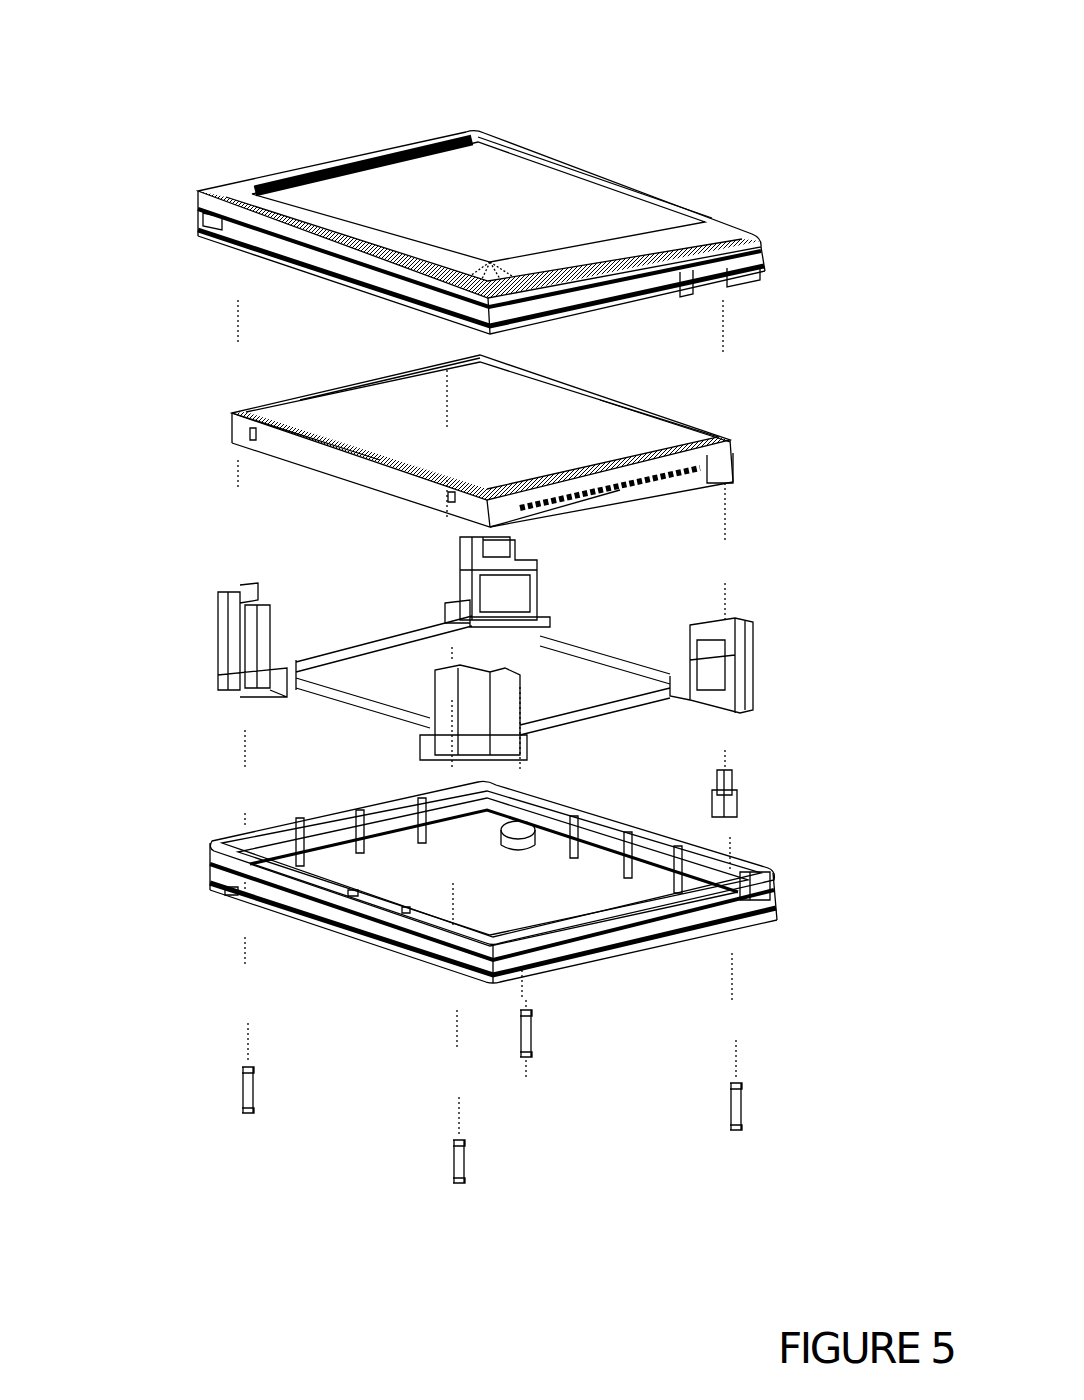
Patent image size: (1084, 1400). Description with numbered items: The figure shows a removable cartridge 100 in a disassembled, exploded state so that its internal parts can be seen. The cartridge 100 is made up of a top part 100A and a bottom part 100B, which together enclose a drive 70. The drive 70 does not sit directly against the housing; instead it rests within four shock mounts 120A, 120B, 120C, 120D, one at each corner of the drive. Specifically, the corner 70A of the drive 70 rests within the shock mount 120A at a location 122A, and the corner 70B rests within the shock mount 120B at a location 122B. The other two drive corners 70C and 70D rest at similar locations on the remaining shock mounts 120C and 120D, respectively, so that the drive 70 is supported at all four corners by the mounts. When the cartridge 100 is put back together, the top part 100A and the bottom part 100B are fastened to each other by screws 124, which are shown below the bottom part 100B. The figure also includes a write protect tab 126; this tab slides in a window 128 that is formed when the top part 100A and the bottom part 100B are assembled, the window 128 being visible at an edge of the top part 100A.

The cartridge 100 is at (622, 133).
The top part 100A is at (230, 187).
The bottom part 100B is at (207, 883).
The window 128 is at (717, 288).
The drive 70 is at (510, 427).
The corner of the drive 70A is at (492, 348).
The corner of the drive 70B is at (740, 450).
The corner of the drive 70C is at (223, 410).
The corner of the drive 70D is at (510, 520).
The shock mount 120A is at (452, 547).
The shock mount 120B is at (757, 655).
The shock mount 120C is at (448, 713).
The shock mount 120D is at (207, 620).
The location 122A is at (497, 597).
The location 122B is at (697, 663).
The screws 124 is at (447, 1168).
The write protect tab 126 is at (743, 797).